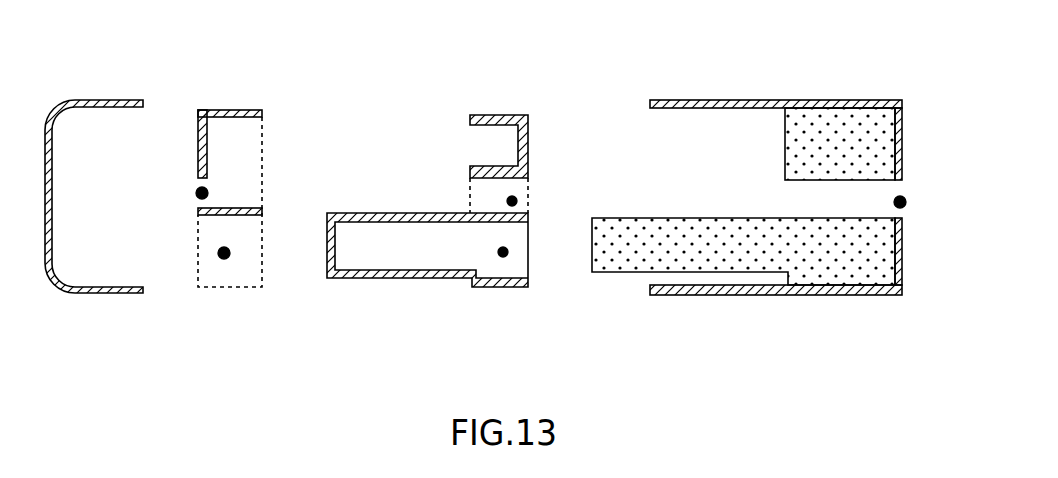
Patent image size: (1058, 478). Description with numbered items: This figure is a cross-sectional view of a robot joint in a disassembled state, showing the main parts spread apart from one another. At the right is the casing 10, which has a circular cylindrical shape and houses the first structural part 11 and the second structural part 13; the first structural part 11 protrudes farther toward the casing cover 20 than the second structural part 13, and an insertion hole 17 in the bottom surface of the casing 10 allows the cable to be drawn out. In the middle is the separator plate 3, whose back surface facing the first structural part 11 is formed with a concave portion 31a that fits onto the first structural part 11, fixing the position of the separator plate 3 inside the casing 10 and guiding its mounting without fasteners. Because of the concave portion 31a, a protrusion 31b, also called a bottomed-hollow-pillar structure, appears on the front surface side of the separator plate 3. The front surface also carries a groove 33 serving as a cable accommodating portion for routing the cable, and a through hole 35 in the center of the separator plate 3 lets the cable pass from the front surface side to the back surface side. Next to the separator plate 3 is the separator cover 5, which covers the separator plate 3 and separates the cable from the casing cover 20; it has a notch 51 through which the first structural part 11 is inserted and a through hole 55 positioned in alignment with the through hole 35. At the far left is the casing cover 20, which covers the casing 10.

The separator plate 3 is at (507, 101).
The separator cover 5 is at (235, 101).
The casing 10 is at (725, 102).
The first structural part 11 is at (823, 257).
The second structural part 13 is at (822, 137).
The insertion hole 17 is at (900, 202).
The casing cover 20 is at (103, 100).
The concave portion 31a is at (503, 252).
The protrusion 31b is at (325, 253).
The groove 33 is at (485, 147).
The through hole 35 is at (512, 201).
The notch 51 is at (224, 253).
The through hole 55 is at (202, 193).